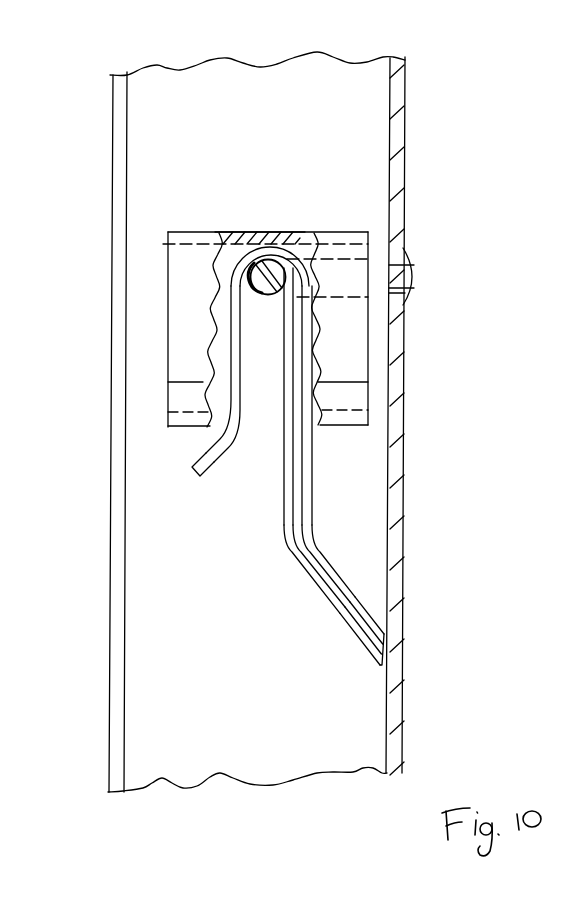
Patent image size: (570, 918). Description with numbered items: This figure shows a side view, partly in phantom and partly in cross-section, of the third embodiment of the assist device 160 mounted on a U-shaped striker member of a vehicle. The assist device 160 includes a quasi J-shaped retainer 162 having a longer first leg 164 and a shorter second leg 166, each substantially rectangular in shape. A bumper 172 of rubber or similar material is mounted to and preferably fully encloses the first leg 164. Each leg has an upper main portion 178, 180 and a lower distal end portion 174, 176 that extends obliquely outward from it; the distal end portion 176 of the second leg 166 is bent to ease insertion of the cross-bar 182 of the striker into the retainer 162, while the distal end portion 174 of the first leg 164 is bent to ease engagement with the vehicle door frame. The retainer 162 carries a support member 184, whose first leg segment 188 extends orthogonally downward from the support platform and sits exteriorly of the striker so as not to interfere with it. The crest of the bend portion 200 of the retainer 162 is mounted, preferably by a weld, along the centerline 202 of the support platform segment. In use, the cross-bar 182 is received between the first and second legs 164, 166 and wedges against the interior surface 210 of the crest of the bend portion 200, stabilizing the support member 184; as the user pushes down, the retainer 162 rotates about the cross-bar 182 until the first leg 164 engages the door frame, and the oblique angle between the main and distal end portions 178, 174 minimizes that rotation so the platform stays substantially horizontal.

The assist device 160 is at (307, 445).
The retainer 162 is at (298, 634).
The first leg 164 is at (362, 606).
The second leg 166 is at (223, 444).
The bumper 172 is at (313, 446).
The distal end portion of first leg 174 is at (372, 644).
The distal end portion of second leg 176 is at (202, 447).
The main portion of first leg 178 is at (295, 478).
The main portion of second leg 180 is at (245, 367).
The cross-bar 182 is at (264, 295).
The support member 184 is at (157, 305).
The first leg segment 188 is at (352, 347).
The bend portion 200 is at (295, 253).
The centerline 202 is at (266, 246).
The interior surface 210 is at (243, 268).